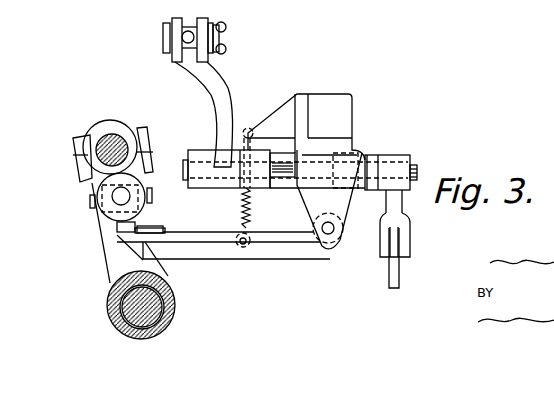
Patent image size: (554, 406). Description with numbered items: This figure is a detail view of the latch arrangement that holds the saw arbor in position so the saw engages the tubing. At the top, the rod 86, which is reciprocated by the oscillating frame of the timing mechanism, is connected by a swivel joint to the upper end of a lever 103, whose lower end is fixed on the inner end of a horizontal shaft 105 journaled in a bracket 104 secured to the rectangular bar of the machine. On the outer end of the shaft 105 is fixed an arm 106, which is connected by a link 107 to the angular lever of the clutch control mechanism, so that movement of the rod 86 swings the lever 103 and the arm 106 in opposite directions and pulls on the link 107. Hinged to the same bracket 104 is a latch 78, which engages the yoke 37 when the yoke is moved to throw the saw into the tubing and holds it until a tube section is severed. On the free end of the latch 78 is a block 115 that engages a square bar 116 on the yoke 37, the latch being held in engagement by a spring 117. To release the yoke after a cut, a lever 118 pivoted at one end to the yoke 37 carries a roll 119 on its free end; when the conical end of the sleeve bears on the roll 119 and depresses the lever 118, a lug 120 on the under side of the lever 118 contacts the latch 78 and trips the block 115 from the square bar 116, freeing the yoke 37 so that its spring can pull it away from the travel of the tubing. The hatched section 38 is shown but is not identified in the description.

The yoke 37 is at (108, 133).
The roller shaft 38 is at (152, 313).
The latch 78 is at (218, 250).
The rod 86 is at (183, 37).
The lever 103 is at (220, 82).
The bracket 104 is at (330, 250).
The horizontal shaft 105 is at (415, 168).
The arm 106 is at (407, 237).
The link 107 is at (399, 276).
The block 115 is at (127, 240).
The square bar 116 is at (117, 232).
The spring 117 is at (255, 205).
The lever 118 is at (108, 214).
The roll 119 is at (118, 228).
The lug 120 is at (143, 220).